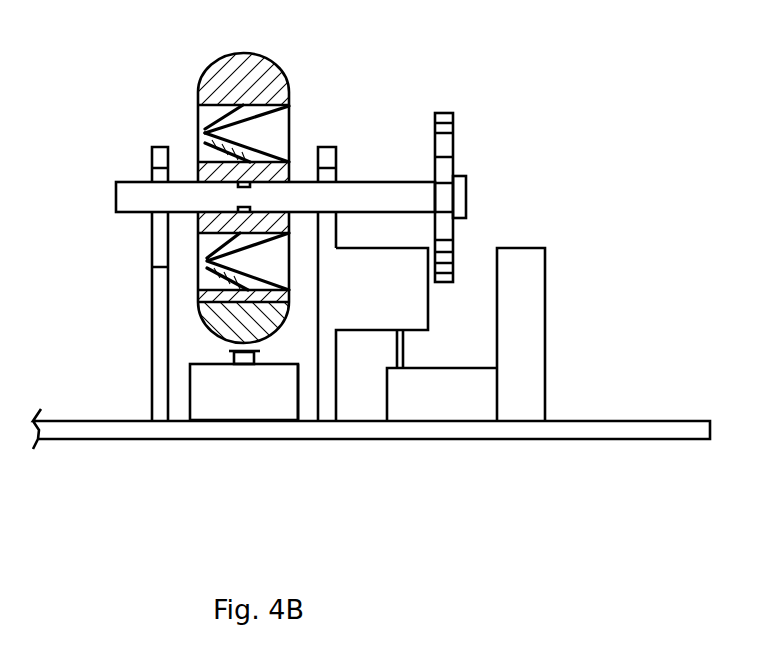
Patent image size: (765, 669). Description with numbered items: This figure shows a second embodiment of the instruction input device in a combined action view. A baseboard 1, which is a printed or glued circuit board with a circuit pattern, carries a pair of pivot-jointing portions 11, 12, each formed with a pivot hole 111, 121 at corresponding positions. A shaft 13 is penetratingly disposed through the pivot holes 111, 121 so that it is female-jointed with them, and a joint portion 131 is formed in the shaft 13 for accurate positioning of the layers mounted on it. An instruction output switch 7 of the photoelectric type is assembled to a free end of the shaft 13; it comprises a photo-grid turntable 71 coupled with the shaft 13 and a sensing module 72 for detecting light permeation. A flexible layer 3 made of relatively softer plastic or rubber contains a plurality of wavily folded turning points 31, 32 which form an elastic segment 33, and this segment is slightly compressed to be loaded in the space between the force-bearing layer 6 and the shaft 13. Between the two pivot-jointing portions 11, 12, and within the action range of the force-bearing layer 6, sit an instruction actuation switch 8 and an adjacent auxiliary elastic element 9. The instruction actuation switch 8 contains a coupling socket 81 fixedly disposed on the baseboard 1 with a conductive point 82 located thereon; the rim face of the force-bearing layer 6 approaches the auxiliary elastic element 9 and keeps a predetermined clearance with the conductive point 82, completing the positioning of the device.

The baseboard 1 is at (632, 420).
The flexible layer 3 is at (206, 199).
The force-bearing layer 6 is at (240, 65).
The instruction output switch 7 is at (480, 208).
The instruction actuation switch 8 is at (228, 446).
The auxiliary elastic element 9 is at (233, 439).
The pivot-jointing portion 11 is at (107, 310).
The pivot-jointing portion 12 is at (386, 297).
The shaft 13 is at (237, 219).
The turning point 31 is at (198, 133).
The turning point 32 is at (205, 260).
The elastic segment 33 is at (200, 298).
The photo-grid turntable 71 is at (447, 147).
The sensing module 72 is at (388, 293).
The coupling socket 81 is at (275, 400).
The conductive point 82 is at (241, 354).
The pivot hole 111 is at (152, 178).
The pivot hole 121 is at (334, 180).
The joint portion 131 is at (225, 232).